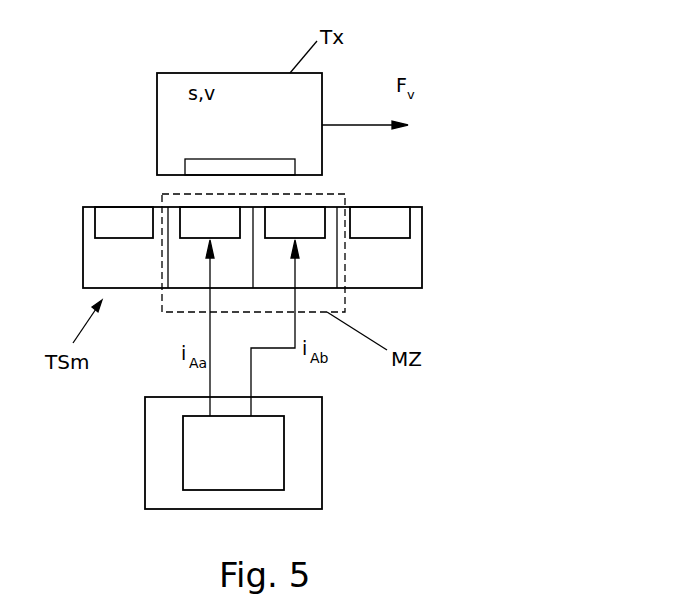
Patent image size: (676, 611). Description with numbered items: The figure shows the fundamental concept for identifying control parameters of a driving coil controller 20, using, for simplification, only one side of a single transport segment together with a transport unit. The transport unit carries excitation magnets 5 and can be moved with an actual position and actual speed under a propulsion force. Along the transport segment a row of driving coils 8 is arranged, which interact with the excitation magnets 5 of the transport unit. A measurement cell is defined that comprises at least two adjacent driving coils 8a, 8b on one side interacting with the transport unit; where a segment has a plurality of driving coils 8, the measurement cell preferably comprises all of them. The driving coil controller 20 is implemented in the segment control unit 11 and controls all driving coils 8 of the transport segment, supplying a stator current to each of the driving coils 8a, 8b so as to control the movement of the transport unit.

The excitation magnets 5 is at (295, 165).
The driving coils 8 is at (125, 218).
The first driving coil 8a is at (193, 223).
The second driving coil 8b is at (315, 218).
The segment control unit 11 is at (323, 463).
The driving coil controller 20 is at (246, 459).